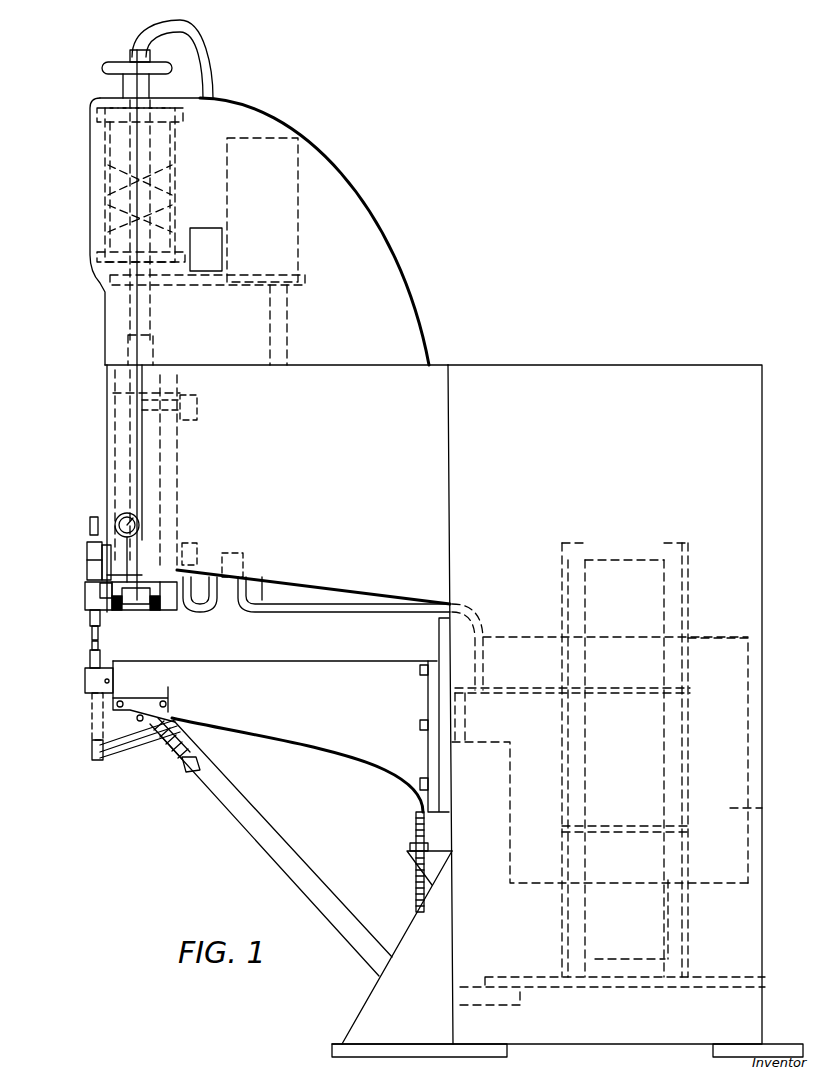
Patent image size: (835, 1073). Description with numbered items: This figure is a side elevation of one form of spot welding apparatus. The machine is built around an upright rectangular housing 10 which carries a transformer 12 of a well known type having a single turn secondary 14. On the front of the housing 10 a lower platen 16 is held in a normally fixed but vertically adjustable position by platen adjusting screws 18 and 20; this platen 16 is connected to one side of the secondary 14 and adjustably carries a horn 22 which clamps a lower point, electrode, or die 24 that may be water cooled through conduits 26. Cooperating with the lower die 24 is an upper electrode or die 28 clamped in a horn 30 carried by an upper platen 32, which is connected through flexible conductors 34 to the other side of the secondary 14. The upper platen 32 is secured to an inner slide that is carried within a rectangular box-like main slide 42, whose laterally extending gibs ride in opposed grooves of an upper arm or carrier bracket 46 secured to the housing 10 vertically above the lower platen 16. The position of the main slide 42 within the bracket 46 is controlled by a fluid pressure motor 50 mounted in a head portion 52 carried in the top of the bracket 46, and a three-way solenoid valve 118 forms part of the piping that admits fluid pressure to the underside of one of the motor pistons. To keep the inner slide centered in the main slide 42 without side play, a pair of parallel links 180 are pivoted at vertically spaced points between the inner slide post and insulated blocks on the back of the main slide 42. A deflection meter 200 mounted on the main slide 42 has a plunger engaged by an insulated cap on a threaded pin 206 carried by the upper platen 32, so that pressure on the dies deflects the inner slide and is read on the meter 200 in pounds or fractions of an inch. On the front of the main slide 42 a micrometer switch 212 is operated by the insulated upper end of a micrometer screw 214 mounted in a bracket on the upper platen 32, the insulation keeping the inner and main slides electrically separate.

The housing 10 is at (700, 340).
The transformer 12 is at (683, 612).
The single turn secondary 14 is at (762, 808).
The platen 16 is at (292, 718).
The platen adjusting screw 18 is at (180, 762).
The platen adjusting screw 20 is at (412, 818).
The horn 22 is at (85, 682).
The electrode or die 24 is at (92, 718).
The conduits 26 is at (130, 752).
The electrode or die 28 is at (100, 550).
The horn 30 is at (92, 601).
The platen 32 is at (150, 604).
The flexible conductors 34 is at (265, 612).
The main slide 42 is at (105, 431).
The upper arm or carrier bracket 46 is at (420, 380).
The fluid pressure motor 50 is at (100, 168).
The head portion 52 is at (352, 182).
The three-way solenoid valve 118 is at (200, 235).
The links 180 is at (162, 540).
The deflection meter 200 is at (118, 518).
The pin 206 is at (125, 612).
The micrometer switch 212 is at (105, 557).
The micrometer screw 214 is at (98, 590).